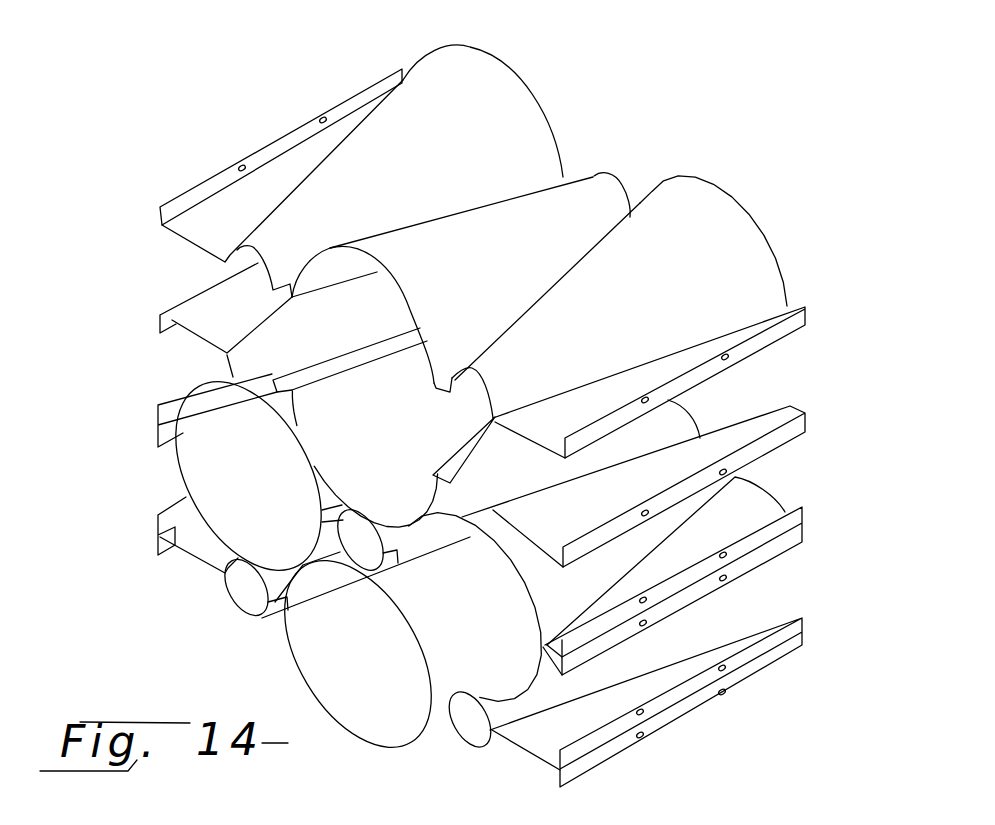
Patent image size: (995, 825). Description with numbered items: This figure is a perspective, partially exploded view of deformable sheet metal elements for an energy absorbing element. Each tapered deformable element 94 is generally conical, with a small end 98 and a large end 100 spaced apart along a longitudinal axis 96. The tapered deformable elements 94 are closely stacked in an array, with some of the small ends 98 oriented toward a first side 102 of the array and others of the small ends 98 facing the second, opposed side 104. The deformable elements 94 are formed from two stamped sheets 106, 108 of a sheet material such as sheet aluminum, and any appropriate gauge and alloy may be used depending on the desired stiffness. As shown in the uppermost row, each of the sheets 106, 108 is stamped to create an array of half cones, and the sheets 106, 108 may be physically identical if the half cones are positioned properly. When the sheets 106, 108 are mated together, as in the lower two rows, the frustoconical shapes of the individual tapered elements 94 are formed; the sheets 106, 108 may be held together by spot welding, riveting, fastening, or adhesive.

The tapered deformable element 94 is at (292, 692).
The longitudinal axis 96 is at (145, 647).
The small end 98 is at (613, 184).
The large end 100 is at (763, 230).
The first side 102 is at (856, 277).
The second side 104 is at (164, 585).
The stamped sheet 106 is at (171, 227).
The stamped sheet 108 is at (160, 318).